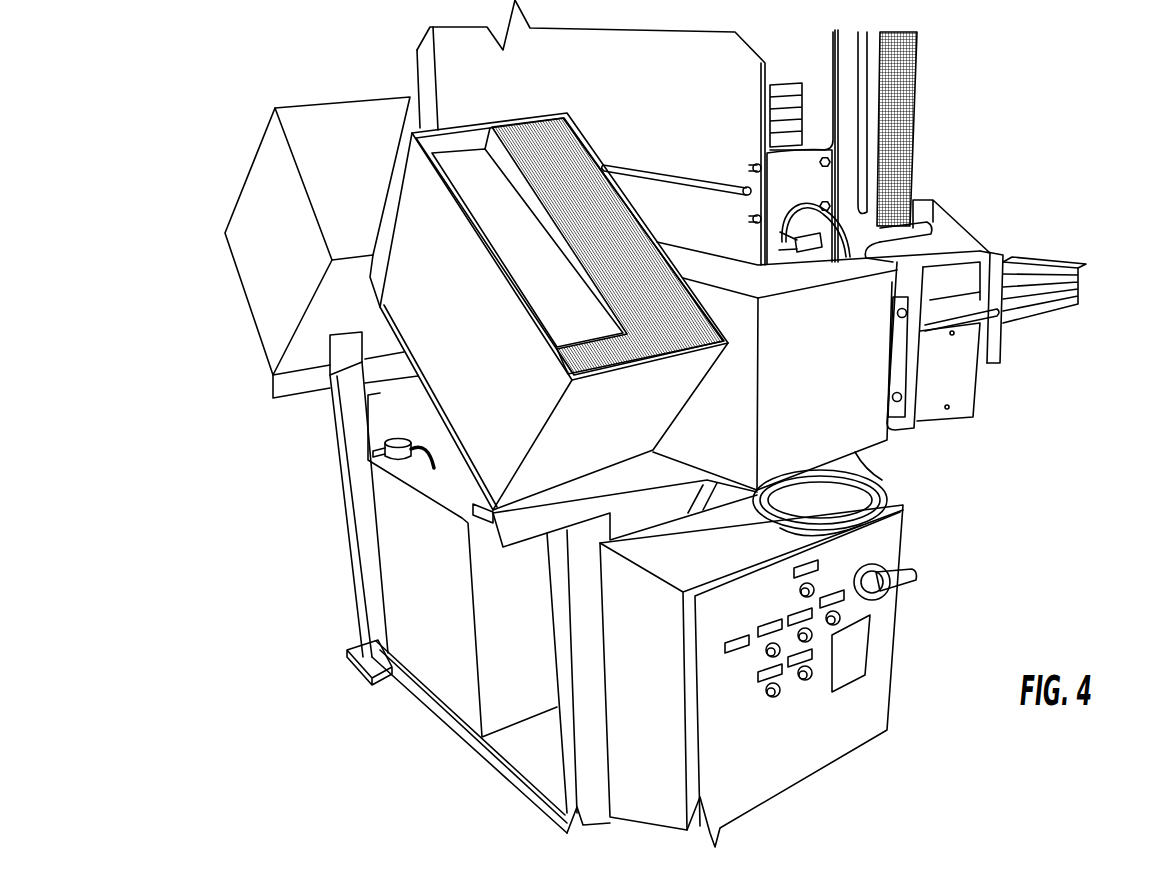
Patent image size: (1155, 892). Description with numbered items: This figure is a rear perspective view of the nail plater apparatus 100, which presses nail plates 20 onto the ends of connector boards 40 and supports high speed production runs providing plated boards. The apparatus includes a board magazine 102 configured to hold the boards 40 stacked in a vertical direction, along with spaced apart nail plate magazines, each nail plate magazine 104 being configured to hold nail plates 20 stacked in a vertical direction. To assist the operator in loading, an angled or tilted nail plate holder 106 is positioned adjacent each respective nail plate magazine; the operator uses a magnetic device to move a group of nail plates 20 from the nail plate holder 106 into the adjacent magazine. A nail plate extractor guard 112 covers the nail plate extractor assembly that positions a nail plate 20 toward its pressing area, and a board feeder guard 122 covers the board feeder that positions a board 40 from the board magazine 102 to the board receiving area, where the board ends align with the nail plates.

The nail plater apparatus 100 is at (667, 423).
The board magazine 102 is at (827, 87).
The connector board 40 is at (800, 116).
The nail plate magazine 104 is at (915, 147).
The nail plate 20 is at (903, 180).
The nail plate holder 106 is at (268, 148).
The nail plate extractor guard 112 is at (952, 295).
The board feeder guard 122 is at (813, 410).